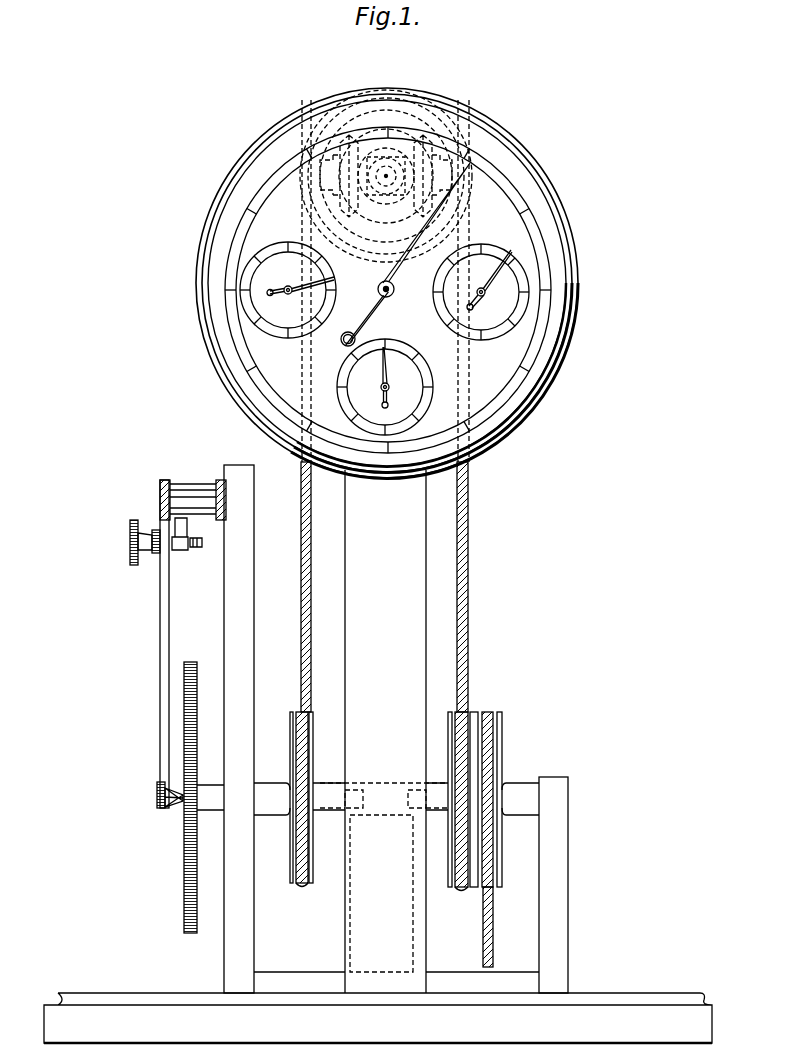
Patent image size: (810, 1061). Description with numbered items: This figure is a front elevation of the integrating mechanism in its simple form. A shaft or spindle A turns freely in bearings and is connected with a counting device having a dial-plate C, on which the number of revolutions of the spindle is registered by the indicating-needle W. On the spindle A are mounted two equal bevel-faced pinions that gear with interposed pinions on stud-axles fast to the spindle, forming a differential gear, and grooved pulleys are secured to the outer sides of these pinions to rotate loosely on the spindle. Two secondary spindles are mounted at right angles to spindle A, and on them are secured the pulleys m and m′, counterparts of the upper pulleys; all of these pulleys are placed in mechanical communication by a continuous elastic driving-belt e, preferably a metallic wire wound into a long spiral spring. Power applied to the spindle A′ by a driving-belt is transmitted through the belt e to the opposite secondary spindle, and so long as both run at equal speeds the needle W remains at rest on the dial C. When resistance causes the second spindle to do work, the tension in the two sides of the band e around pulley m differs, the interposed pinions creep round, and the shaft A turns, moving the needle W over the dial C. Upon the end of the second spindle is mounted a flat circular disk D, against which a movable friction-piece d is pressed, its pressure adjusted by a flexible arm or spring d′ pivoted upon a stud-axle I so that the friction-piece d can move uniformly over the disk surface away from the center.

The dial-plate C is at (580, 296).
The shaft or spindle A is at (386, 180).
The indicating-needle W is at (438, 233).
The stud-axle I is at (160, 497).
The flexible arm or spring d′ is at (160, 634).
The movable friction-piece d is at (160, 808).
The flat circular disk D is at (184, 875).
The secondary axle or spindle A′ is at (520, 799).
The continuous driving-belt e is at (391, 587).
The pulley or grooved wheel m′ is at (301, 810).
The pulley or grooved wheel m is at (474, 810).
The weight F′ is at (503, 940).